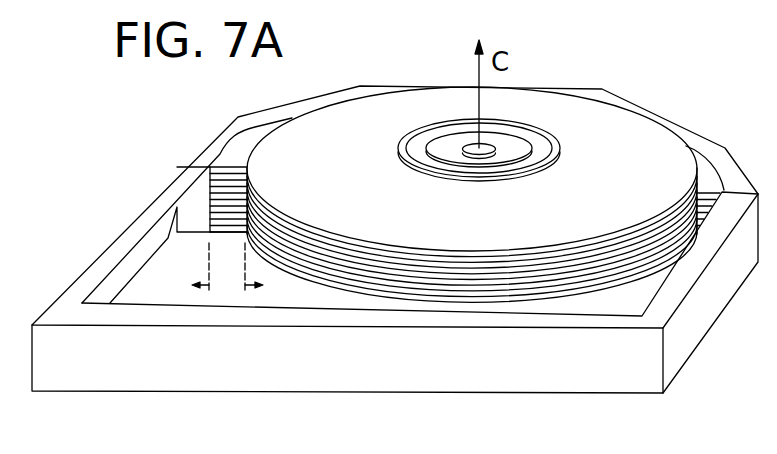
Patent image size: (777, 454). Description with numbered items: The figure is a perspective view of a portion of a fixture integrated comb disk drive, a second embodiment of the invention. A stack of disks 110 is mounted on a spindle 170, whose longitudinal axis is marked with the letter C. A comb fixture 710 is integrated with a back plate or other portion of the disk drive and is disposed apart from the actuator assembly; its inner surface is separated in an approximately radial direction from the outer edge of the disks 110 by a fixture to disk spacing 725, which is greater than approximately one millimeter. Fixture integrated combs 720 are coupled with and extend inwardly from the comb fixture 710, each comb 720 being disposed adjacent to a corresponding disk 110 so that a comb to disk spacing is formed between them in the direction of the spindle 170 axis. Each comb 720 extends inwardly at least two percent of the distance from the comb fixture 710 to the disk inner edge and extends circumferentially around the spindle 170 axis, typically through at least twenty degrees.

The disk 110 is at (605, 123).
The spindle 170 is at (490, 150).
The comb fixture 710 is at (197, 156).
The fixture integrated comb 720 is at (235, 155).
The fixture to disk spacing 725 is at (227, 287).